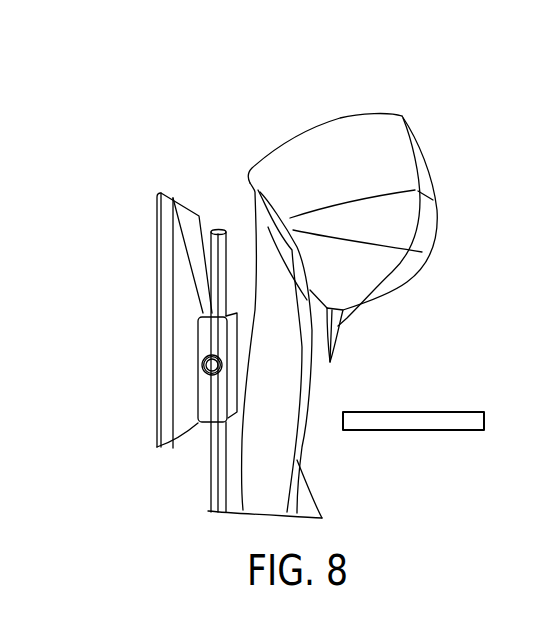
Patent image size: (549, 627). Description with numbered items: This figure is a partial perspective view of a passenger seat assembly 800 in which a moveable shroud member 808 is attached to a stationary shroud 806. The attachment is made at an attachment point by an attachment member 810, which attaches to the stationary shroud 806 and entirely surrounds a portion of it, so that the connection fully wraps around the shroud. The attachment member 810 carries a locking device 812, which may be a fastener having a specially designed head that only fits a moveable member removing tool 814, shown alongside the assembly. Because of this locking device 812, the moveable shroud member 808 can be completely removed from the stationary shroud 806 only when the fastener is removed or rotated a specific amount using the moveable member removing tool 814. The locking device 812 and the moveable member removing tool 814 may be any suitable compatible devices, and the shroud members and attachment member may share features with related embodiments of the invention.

The passenger seat assembly 800 is at (226, 89).
The stationary shroud 806 is at (218, 231).
The moveable shroud member 808 is at (176, 259).
The attachment member 810 is at (222, 406).
The locking device 812 is at (200, 364).
The moveable member removing tool 814 is at (434, 420).